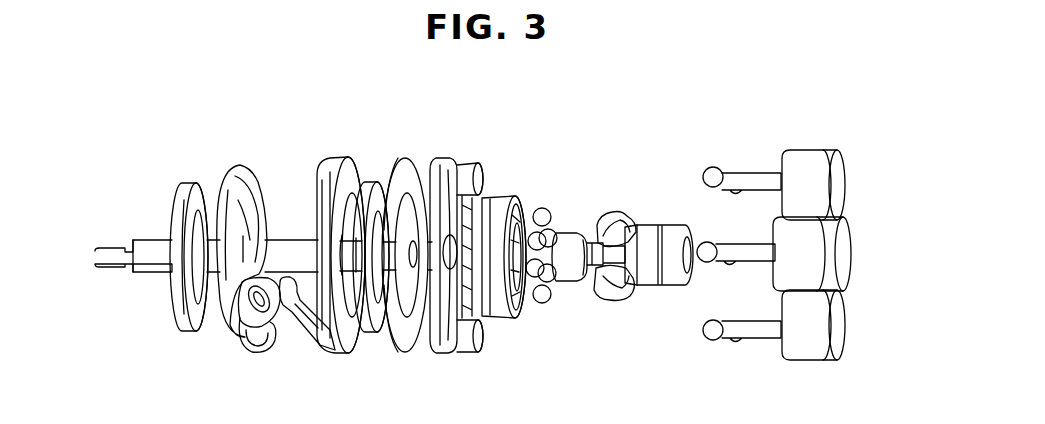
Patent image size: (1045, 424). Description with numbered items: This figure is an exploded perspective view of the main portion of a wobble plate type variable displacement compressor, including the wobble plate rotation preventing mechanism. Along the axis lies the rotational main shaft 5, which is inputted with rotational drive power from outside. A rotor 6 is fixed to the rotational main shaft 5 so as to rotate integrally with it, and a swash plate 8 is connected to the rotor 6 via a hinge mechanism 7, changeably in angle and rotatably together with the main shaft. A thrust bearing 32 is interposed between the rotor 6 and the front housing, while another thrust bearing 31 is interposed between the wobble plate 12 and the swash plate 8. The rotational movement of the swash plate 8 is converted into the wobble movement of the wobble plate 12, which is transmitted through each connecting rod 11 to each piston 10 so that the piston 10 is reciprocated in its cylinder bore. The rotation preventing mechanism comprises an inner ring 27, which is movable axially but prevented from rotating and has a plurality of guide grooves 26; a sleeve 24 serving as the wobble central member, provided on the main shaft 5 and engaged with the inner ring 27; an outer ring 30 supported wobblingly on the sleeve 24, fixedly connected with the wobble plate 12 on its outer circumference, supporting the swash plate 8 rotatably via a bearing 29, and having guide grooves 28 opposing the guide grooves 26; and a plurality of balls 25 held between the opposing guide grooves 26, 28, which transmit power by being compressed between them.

The rotational main shaft 5 is at (152, 265).
The rotor 6 is at (232, 190).
The hinge mechanism 7 is at (255, 353).
The swash plate 8 is at (330, 345).
The piston 10 is at (802, 162).
The connecting rod 11 is at (757, 180).
The wobble plate 12 is at (447, 163).
The sleeve 24 is at (570, 283).
The balls 25 is at (545, 215).
The guide grooves 26 is at (597, 270).
The inner ring 27 is at (645, 272).
The guide grooves 28 is at (502, 240).
The bearing 29 is at (368, 183).
The outer ring 30 is at (513, 317).
The thrust bearing 31 is at (402, 157).
The thrust bearing 32 is at (182, 313).